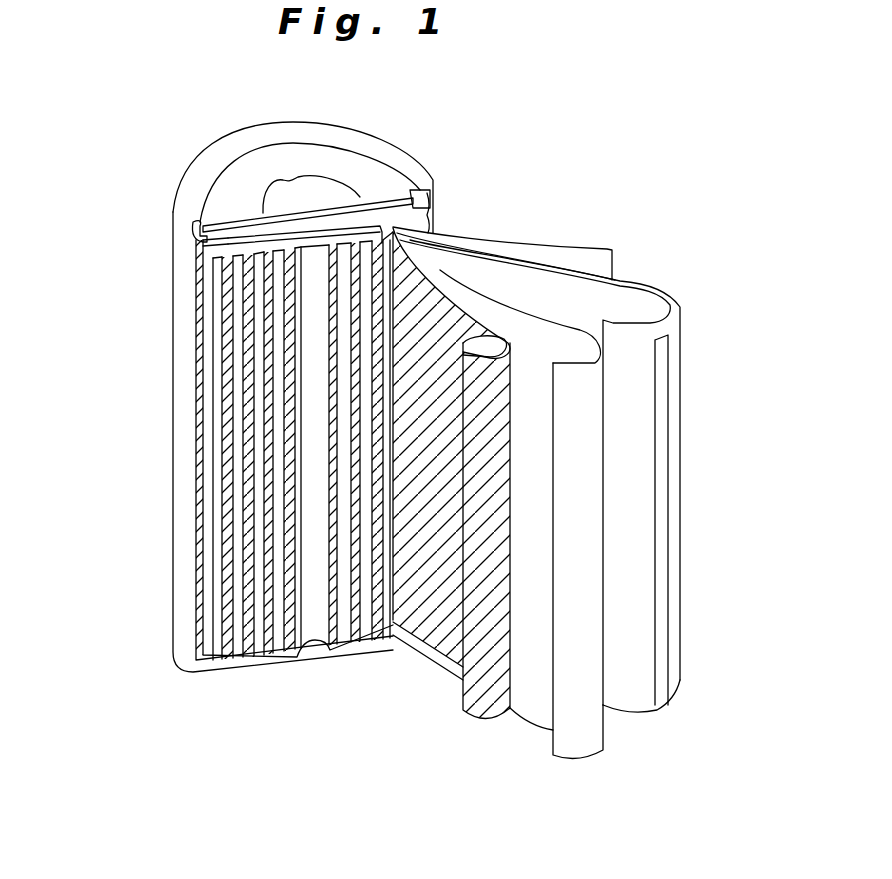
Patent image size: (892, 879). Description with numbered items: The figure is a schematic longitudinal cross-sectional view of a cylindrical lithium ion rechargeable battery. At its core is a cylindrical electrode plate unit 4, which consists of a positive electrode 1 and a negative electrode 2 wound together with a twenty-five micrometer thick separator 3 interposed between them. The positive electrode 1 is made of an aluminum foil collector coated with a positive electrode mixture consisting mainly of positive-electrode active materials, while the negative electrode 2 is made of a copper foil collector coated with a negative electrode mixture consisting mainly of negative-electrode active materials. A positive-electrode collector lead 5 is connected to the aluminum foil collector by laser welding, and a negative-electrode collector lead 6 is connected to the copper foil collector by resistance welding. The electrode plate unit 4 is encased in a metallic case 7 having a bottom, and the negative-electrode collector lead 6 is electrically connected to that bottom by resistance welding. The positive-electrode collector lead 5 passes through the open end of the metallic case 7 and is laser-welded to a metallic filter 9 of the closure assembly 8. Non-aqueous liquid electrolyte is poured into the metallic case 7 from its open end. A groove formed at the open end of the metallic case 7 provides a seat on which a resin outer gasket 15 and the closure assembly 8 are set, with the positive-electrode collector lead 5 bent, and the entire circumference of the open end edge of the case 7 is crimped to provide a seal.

The positive electrode 1 is at (353, 208).
The negative electrode 2 is at (523, 298).
The separator 3 is at (477, 307).
The electrode plate unit 4 is at (262, 538).
The positive-electrode collector lead 5 is at (350, 212).
The negative-electrode collector lead 6 is at (660, 413).
The metallic case 7 is at (187, 267).
The closure assembly 8 is at (292, 160).
The metallic filter 9 is at (263, 248).
The resin outer gasket 15 is at (193, 222).